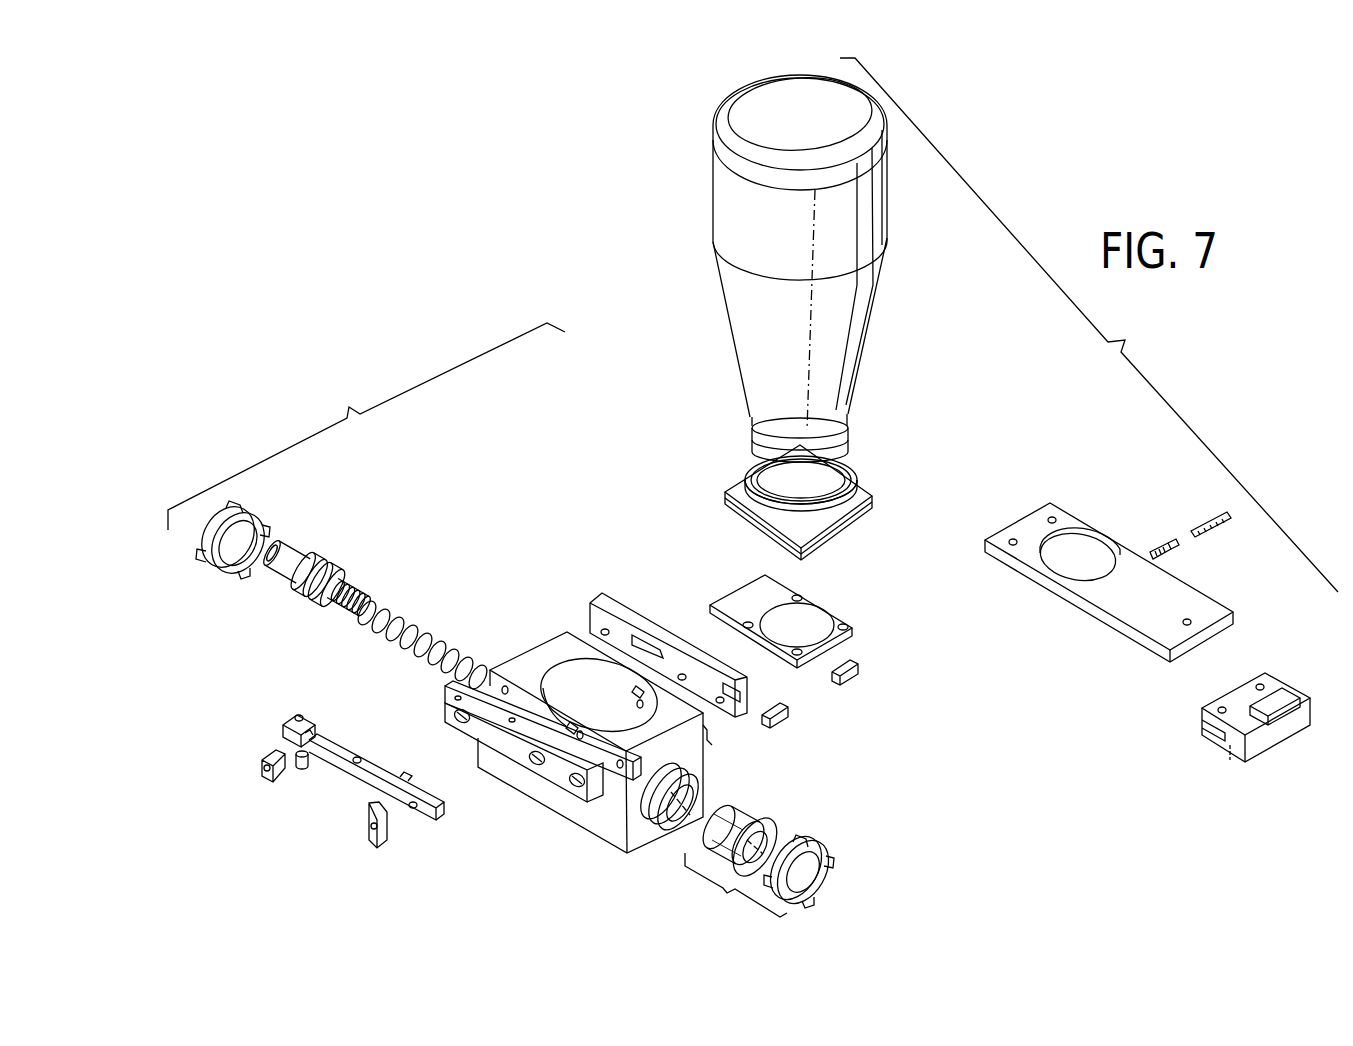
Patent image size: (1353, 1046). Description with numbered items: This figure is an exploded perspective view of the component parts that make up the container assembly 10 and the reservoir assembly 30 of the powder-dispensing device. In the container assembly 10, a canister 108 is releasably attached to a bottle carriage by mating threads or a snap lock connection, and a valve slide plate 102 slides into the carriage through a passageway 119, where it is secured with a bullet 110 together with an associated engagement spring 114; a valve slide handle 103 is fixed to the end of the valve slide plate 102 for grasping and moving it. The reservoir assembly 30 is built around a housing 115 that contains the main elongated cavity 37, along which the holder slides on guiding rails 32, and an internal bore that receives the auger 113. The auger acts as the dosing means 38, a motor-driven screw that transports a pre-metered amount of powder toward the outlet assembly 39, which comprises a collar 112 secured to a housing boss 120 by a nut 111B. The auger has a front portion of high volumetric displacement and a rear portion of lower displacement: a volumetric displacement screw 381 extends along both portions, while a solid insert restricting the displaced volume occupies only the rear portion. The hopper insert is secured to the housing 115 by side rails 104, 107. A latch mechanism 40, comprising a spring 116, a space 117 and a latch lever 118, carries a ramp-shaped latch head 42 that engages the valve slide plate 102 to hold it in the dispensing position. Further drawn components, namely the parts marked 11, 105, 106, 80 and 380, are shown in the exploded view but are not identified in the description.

The container assembly 10 is at (1089, 325).
The reservoir assembly 30 is at (366, 426).
The lock nut 11 is at (258, 530).
The auger 113 is at (383, 605).
The dosing means 38 is at (394, 638).
The volumetric displacement screw 381 is at (366, 634).
The spring second end 380 is at (420, 677).
The elongated cavity 37 is at (595, 751).
The guiding rails 32 is at (670, 630).
The side rail 107 is at (660, 643).
The canister 108 is at (855, 294).
The passageway 119 is at (840, 530).
The spacer block 105 is at (860, 668).
The side rail 104 is at (520, 742).
The rail bar 106 is at (592, 745).
The latch mechanism 40 is at (363, 767).
The ramp-shaped latch head 42 is at (398, 753).
The spring 116 is at (258, 770).
The space 117 is at (300, 770).
The latch lever 118 is at (374, 830).
The housing 115 is at (665, 835).
The housing boss 120 is at (660, 835).
The collar 112 is at (765, 828).
The nut 111B is at (832, 858).
The outlet assembly 39 is at (736, 888).
The valve slide plate 102 is at (1109, 585).
The aperture 80 is at (1065, 562).
The bullet 110 is at (1156, 548).
The engagement spring 114 is at (1205, 525).
The valve slide handle 103 is at (1278, 692).